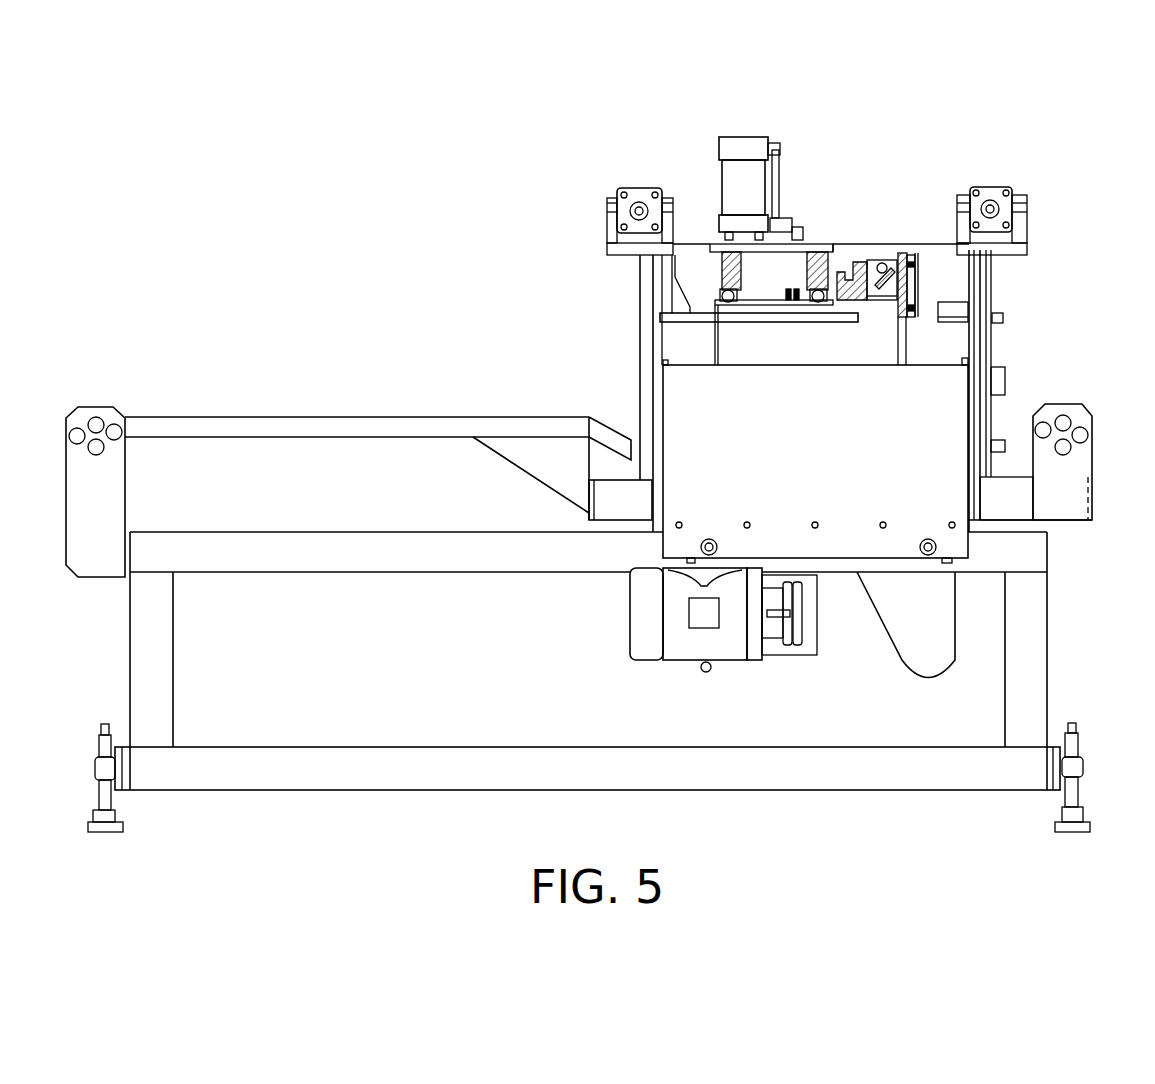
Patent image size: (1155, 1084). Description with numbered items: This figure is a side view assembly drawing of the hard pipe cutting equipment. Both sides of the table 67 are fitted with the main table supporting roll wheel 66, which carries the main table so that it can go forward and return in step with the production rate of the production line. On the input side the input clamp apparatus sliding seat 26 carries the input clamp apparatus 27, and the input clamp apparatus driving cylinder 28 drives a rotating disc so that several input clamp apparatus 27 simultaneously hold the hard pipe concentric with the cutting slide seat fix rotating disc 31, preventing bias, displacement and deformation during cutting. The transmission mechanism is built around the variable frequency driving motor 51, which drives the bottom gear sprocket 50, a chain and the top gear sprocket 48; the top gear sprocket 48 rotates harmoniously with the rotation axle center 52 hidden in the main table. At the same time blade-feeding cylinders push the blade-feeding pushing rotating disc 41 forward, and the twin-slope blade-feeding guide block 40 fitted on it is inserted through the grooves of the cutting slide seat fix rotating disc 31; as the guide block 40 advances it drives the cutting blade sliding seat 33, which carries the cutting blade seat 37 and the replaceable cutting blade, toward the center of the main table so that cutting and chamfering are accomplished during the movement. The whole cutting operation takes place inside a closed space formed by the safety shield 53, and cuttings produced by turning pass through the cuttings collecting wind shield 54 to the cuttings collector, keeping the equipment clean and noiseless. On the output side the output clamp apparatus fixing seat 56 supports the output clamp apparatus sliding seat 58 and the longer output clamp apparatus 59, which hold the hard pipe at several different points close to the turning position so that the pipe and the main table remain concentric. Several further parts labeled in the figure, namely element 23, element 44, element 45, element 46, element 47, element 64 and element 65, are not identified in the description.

The right end block 23 is at (1085, 463).
The input clamp apparatus sliding seat 26 is at (952, 303).
The input clamp apparatus 27 is at (958, 323).
The input clamp apparatus driving cylinder 28 is at (1008, 204).
The cutting slide seat fix rotating disc 31 is at (903, 260).
The cutting blade sliding seat 33 is at (913, 260).
The cutting blade seat 37 is at (918, 313).
The twin-slope blade-feeding guide block 40 is at (872, 265).
The blade-feeding pushing rotating disc 41 is at (852, 278).
The cylinder 44 is at (738, 150).
The pipe and valve 45 is at (782, 222).
The platform plate with hatched block 46 is at (812, 252).
The hatched block 47 is at (720, 268).
The top gear sprocket 48 is at (790, 302).
The bottom gear sprocket 50 is at (630, 193).
The variable frequency driving motor 51 is at (643, 584).
The rotation axle center 52 is at (733, 302).
The safety shield 53 is at (668, 213).
The cuttings collecting wind shield 54 is at (933, 600).
The output clamp apparatus fixing seat 56 is at (652, 370).
The output clamp apparatus sliding seat 58 is at (668, 248).
The output clamp apparatus 59 is at (668, 318).
The beam 64 is at (160, 425).
The left end block 65 is at (80, 422).
The main table supporting roll wheel 66 is at (936, 549).
The table 67 is at (233, 543).